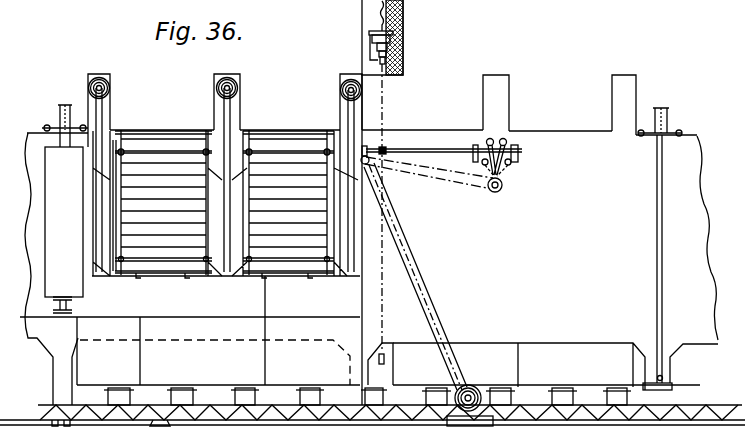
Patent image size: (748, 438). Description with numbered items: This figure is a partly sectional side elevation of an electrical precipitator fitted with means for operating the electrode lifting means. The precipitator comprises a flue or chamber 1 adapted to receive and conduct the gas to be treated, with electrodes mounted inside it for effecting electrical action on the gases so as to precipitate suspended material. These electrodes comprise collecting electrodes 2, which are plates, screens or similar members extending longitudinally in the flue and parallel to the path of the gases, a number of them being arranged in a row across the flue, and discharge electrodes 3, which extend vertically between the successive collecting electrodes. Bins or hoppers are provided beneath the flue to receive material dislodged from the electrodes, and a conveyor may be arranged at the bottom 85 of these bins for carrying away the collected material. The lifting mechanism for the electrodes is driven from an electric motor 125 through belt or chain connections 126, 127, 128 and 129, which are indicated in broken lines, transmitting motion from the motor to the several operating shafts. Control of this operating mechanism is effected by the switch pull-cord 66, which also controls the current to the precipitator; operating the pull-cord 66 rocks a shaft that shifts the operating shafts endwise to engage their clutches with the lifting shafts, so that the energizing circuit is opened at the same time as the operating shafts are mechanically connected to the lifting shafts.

The flue 1 is at (88, 235).
The collecting electrodes 2 is at (128, 201).
The discharge electrodes 3 is at (108, 205).
The switch pull-cord 66 is at (382, 313).
The bottom of the bins 85 is at (256, 398).
The electric motor 125 is at (470, 388).
The belt or chain connection 126 is at (430, 290).
The belt or chain connection 127 is at (426, 178).
The belt or chain connection 128 is at (512, 142).
The belt or chain connection 129 is at (503, 171).